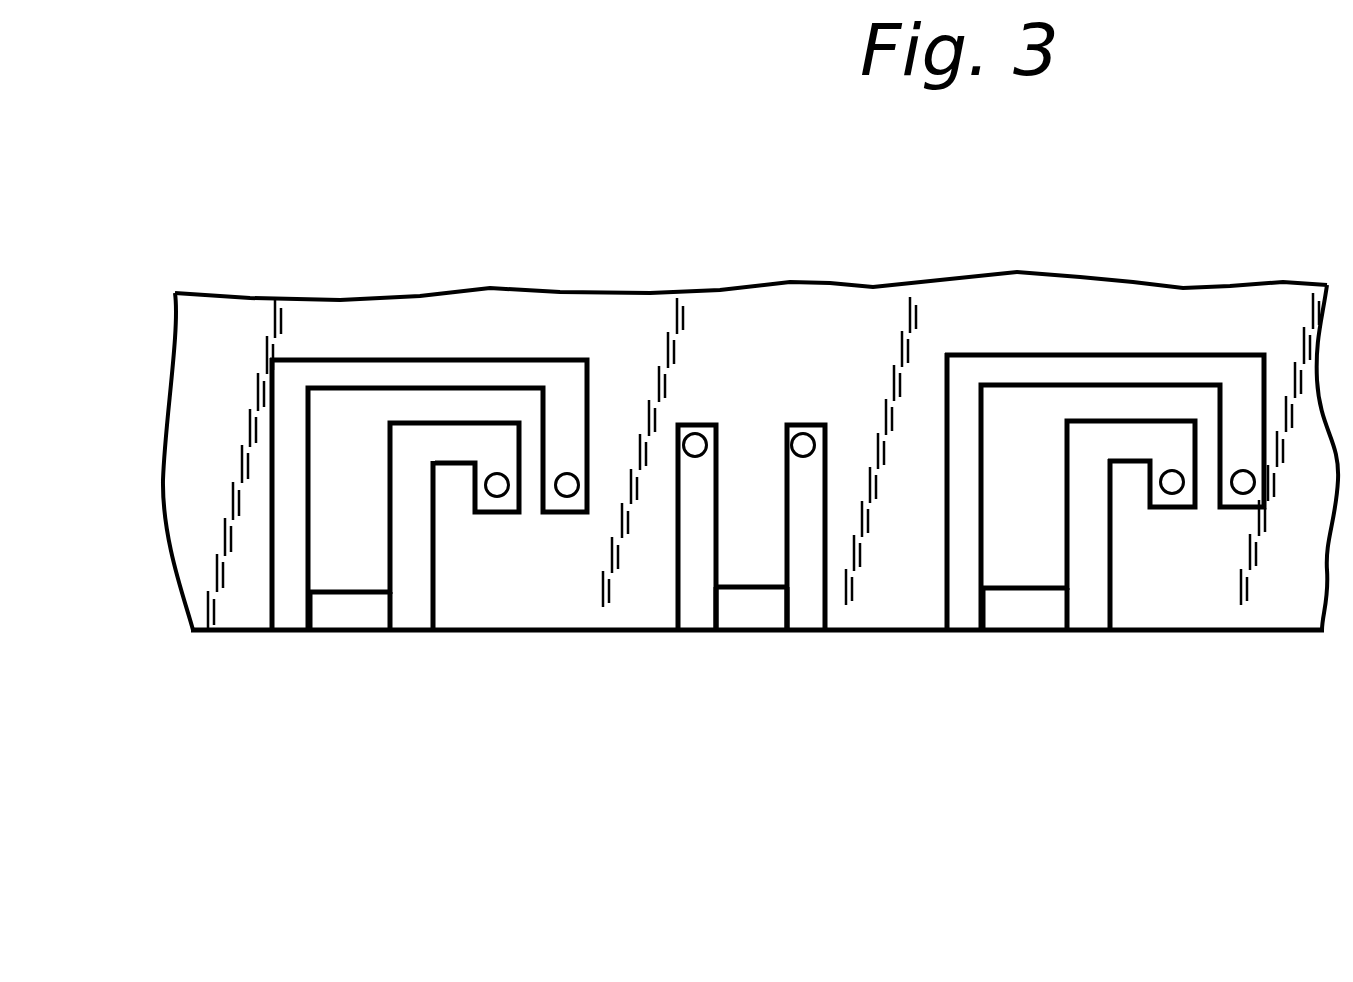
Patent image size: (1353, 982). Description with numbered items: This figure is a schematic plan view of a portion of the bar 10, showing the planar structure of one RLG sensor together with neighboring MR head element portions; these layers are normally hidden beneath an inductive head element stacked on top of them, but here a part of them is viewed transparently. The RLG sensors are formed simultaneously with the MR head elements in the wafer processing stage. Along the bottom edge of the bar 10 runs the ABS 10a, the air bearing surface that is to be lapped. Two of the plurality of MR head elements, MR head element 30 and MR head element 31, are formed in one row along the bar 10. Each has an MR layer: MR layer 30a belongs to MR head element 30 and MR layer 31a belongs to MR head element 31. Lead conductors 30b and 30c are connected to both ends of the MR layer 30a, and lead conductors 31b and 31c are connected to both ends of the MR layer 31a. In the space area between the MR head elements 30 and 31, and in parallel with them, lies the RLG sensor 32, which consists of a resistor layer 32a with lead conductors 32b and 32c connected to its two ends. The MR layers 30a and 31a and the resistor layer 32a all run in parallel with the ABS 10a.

The bar 10 is at (1247, 313).
The ABS of the bar 10a is at (1275, 642).
The MR head element 30 is at (378, 496).
The MR layer 30a is at (353, 607).
The lead conductor 30b is at (267, 605).
The lead conductor 30c is at (427, 590).
The MR head element 31 is at (1091, 488).
The MR layer 31a is at (1027, 603).
The lead conductor 31b is at (968, 603).
The lead conductor 31c is at (1093, 600).
The RLG sensor 32 is at (726, 486).
The resistor layer 32a is at (755, 610).
The lead conductor 32b is at (690, 607).
The lead conductor 32c is at (820, 567).